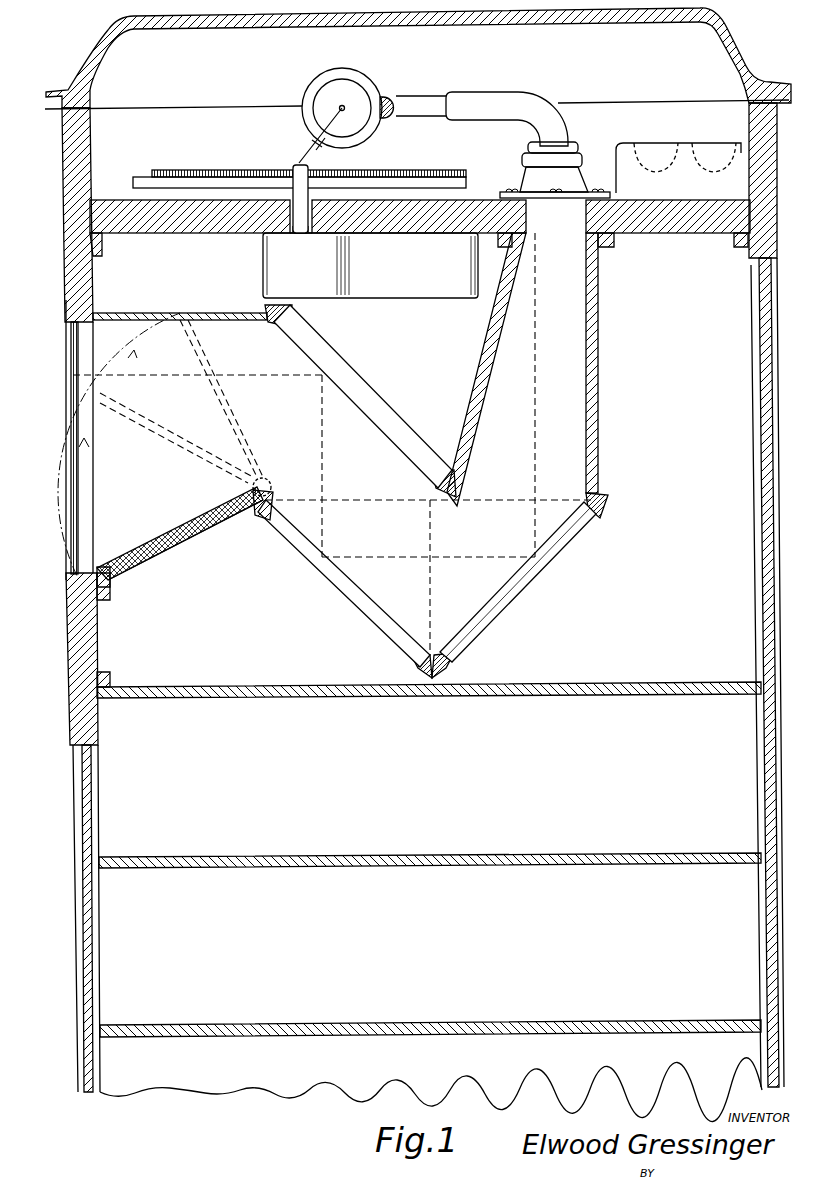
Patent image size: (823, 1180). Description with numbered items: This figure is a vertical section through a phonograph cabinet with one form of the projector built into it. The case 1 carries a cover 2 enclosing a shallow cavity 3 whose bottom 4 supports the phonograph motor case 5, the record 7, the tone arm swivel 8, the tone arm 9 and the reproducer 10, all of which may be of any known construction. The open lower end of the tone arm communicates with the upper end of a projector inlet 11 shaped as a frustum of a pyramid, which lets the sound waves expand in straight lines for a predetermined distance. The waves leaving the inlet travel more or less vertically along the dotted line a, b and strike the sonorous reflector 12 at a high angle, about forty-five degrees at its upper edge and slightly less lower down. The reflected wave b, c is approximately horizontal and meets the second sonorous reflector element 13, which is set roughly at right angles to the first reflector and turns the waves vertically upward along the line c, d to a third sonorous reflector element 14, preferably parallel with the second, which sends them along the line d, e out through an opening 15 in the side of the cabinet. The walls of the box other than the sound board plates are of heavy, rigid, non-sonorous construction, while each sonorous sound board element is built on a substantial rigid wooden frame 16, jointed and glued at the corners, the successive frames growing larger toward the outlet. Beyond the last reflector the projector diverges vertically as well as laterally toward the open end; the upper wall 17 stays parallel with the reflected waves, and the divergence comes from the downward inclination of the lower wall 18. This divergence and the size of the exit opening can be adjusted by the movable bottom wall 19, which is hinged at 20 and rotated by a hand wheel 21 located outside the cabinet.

The case 1 is at (730, 363).
The cover 2 is at (101, 46).
The shallow cavity 3 is at (417, 124).
The bottom 4 is at (177, 222).
The phonograph motor case 5 is at (370, 262).
The record 7 is at (222, 172).
The tone arm swivel 8 is at (570, 183).
The tone arm 9 is at (490, 102).
The reproducer 10 is at (371, 90).
The projector inlet 11 is at (598, 374).
The sonorous reflector 12 is at (522, 590).
The second sonorous reflector element 13 is at (331, 590).
The third sonorous reflector element 14 is at (378, 421).
The opening 15 is at (66, 408).
The frame 16 is at (440, 470).
The upper wall 17 is at (181, 313).
The lower wall 18 is at (193, 541).
The movable bottom wall 19 is at (165, 531).
The hinge 20 is at (273, 491).
The hand wheel 21 is at (268, 478).
The incident wave line point a is at (540, 391).
The reflection point on first reflector b is at (535, 557).
The reflection point on second reflector c is at (428, 545).
The reflection point on third reflector d is at (310, 465).
The exit wave line point e is at (73, 378).